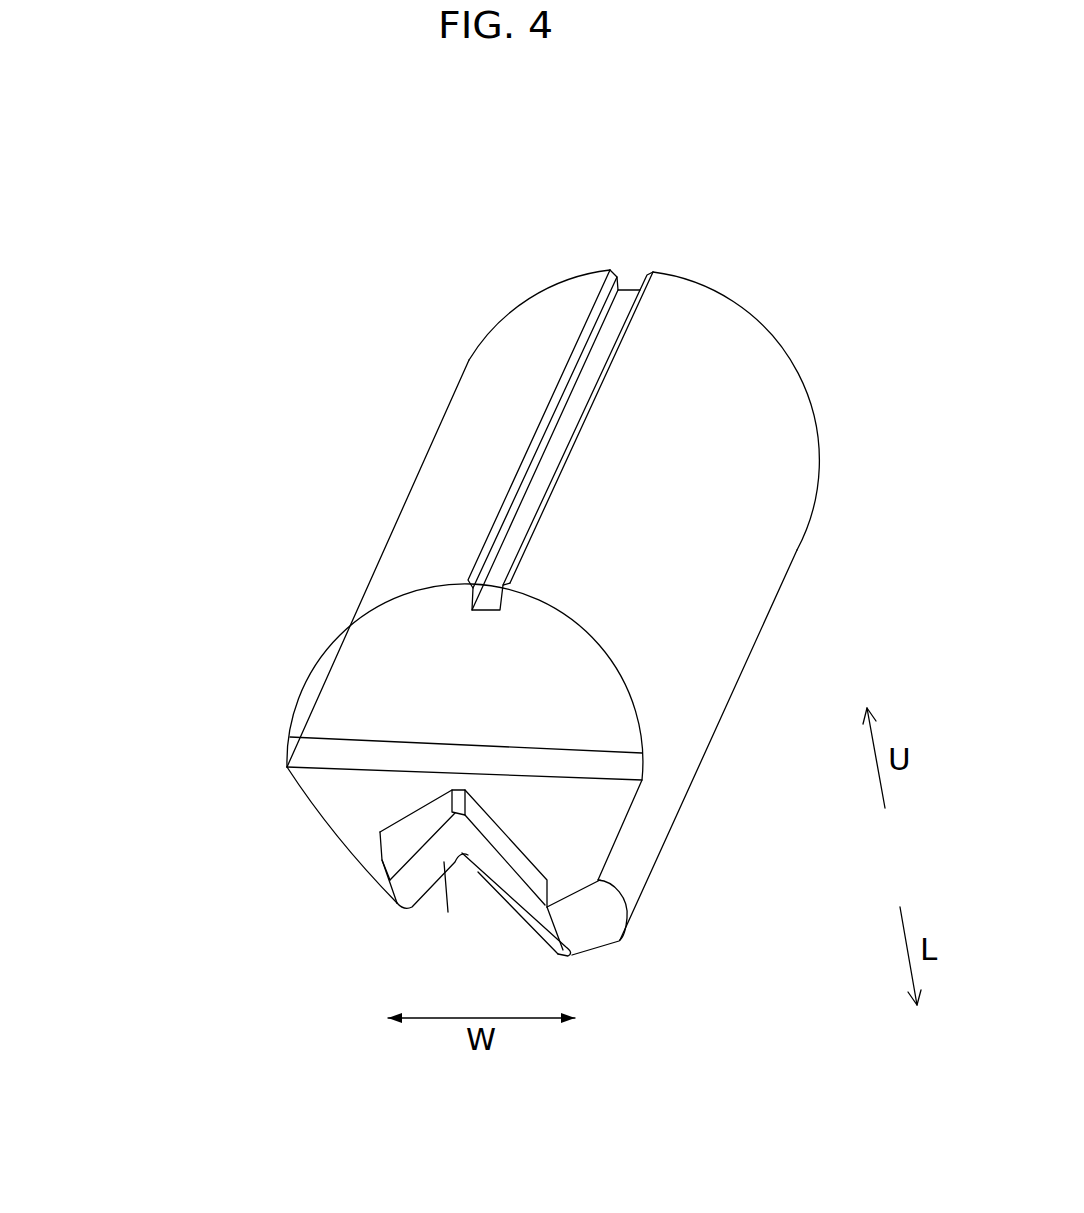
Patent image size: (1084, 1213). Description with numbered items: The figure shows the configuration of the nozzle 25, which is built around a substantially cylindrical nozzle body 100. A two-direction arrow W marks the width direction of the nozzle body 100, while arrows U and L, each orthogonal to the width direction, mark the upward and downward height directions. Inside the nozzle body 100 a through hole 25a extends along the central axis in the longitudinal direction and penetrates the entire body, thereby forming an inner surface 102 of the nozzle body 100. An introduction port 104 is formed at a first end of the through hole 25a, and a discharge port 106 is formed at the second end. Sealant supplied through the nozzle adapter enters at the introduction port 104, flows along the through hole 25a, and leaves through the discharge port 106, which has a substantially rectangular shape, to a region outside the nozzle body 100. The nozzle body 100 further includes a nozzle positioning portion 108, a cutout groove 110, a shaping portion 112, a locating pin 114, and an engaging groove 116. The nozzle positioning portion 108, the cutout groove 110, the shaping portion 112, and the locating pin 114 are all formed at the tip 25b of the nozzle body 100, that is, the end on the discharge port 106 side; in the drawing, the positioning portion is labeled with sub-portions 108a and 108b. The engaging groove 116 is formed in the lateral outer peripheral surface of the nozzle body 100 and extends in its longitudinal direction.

The nozzle 25 is at (268, 170).
The through hole 25a is at (498, 862).
The tip 25b is at (150, 700).
The nozzle body 100 is at (760, 455).
The inner surface 102 is at (460, 838).
The introduction port 104 is at (730, 297).
The discharge port 106 is at (410, 908).
The nozzle positioning portion 108 is at (572, 955).
The left bottom portion 108a is at (397, 893).
The right bottom portion 108b is at (563, 933).
The cutout groove 110 is at (418, 823).
The shaping portion 112 is at (433, 898).
The locating pin 114 is at (447, 913).
The engaging groove 116 is at (568, 422).